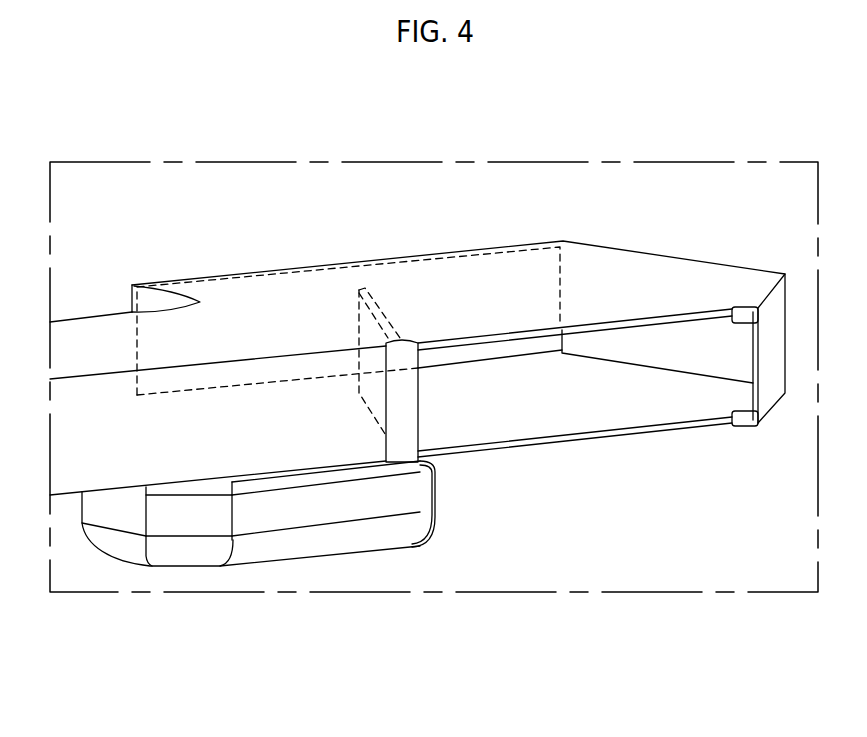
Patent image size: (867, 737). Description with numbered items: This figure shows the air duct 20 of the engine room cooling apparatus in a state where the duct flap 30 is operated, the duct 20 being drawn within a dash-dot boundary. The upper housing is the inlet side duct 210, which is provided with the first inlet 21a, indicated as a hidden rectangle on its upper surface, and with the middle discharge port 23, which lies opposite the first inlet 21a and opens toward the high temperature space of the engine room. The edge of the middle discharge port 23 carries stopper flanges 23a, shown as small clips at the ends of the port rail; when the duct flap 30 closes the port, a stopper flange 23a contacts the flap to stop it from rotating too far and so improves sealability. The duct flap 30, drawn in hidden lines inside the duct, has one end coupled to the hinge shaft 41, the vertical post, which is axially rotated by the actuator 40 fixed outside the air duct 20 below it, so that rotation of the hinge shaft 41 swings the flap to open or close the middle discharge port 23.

The air duct 20 is at (176, 271).
The inlet side duct 210 is at (650, 271).
The first inlet 21a is at (560, 281).
The duct flap 30 is at (347, 290).
The hinge shaft 41 is at (412, 411).
The middle discharge port 23 is at (603, 418).
The stopper flange 23a is at (749, 306).
The actuator 40 is at (285, 547).